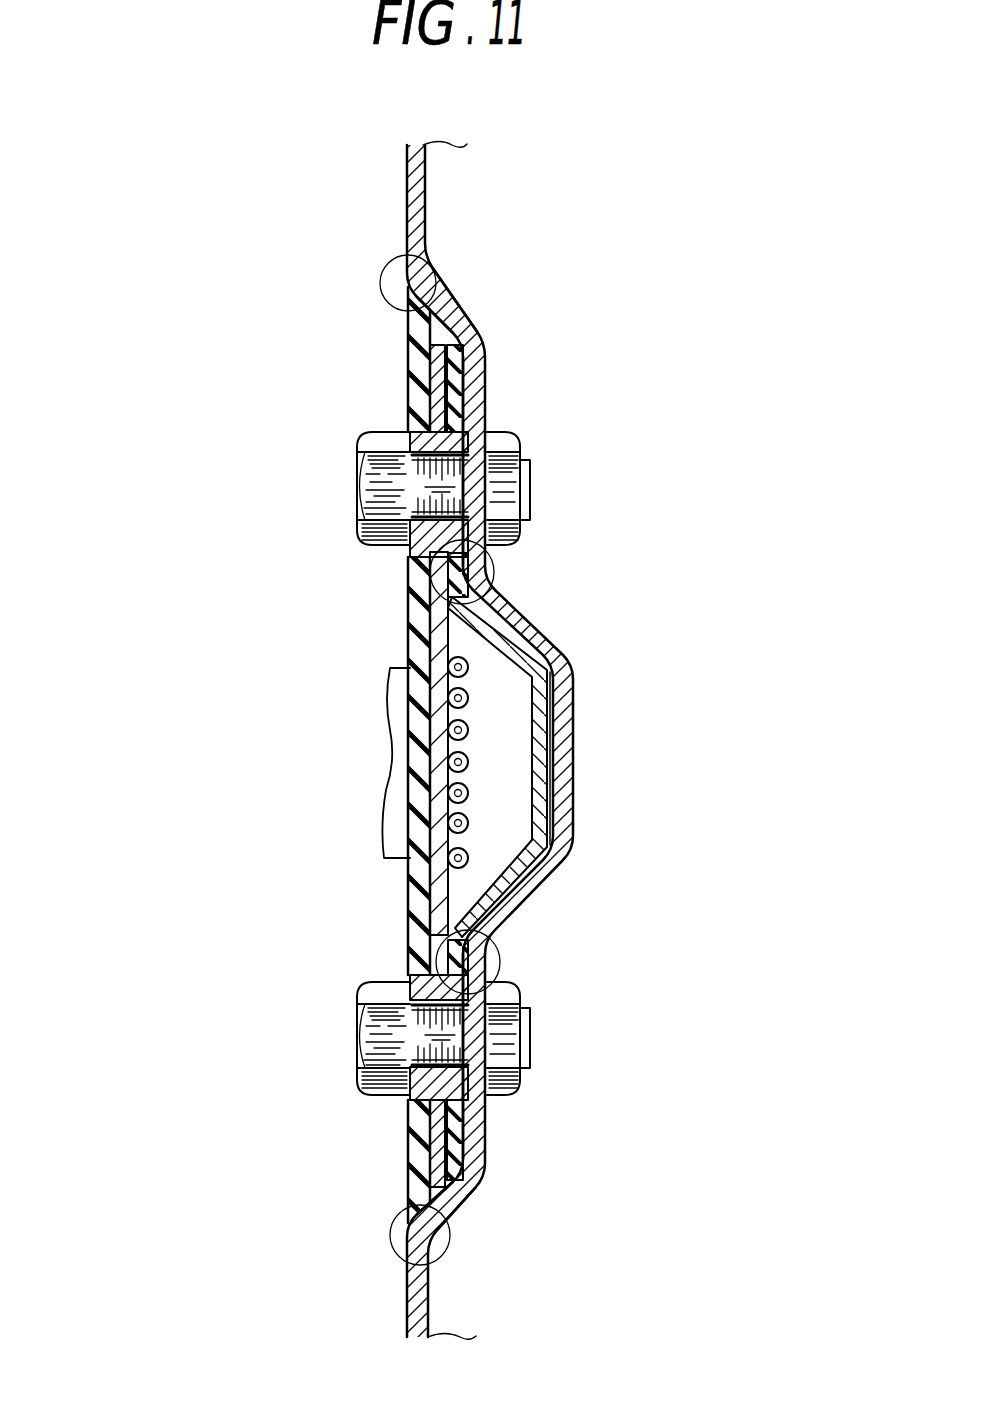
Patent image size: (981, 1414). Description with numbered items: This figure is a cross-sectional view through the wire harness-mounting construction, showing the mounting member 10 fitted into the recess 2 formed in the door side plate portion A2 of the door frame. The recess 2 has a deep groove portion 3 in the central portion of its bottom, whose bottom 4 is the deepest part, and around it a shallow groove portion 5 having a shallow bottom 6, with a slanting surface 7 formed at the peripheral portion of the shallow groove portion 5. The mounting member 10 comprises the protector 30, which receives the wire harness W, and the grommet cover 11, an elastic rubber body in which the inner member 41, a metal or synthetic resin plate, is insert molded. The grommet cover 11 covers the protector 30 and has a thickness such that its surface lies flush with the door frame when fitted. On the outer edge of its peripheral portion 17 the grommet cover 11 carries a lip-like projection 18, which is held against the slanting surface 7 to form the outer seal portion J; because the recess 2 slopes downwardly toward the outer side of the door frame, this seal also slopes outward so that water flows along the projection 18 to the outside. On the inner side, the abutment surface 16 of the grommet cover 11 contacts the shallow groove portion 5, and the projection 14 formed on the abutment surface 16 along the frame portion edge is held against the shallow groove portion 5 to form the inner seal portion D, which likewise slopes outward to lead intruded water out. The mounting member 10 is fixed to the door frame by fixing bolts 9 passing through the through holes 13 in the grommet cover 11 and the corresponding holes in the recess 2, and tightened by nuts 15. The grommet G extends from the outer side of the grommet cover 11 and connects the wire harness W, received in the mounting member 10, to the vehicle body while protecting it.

The mounting member 10 is at (352, 582).
The inner member 41 is at (410, 917).
The peripheral portion 17 is at (455, 305).
The door side plate portion A2 is at (490, 342).
The slanting surface 7 is at (400, 318).
The outer seal portion J is at (448, 262).
The deep groove portion 3 is at (563, 638).
The protector 30 is at (573, 740).
The grommet cover 11 is at (458, 1148).
The abutment surface 16 is at (467, 412).
The bottom 4 is at (575, 678).
The recess 2 is at (430, 620).
The projection 14 is at (493, 553).
The inner seal portion D is at (508, 578).
The lip-like projection 18 is at (404, 266).
The shallow groove portion 5 is at (410, 387).
The shallow bottom 6 is at (453, 372).
The nut 15 is at (512, 432).
The fixing bolt 9 is at (360, 448).
The through hole 13 is at (395, 483).
The wire harness W is at (470, 768).
The grommet G is at (393, 770).